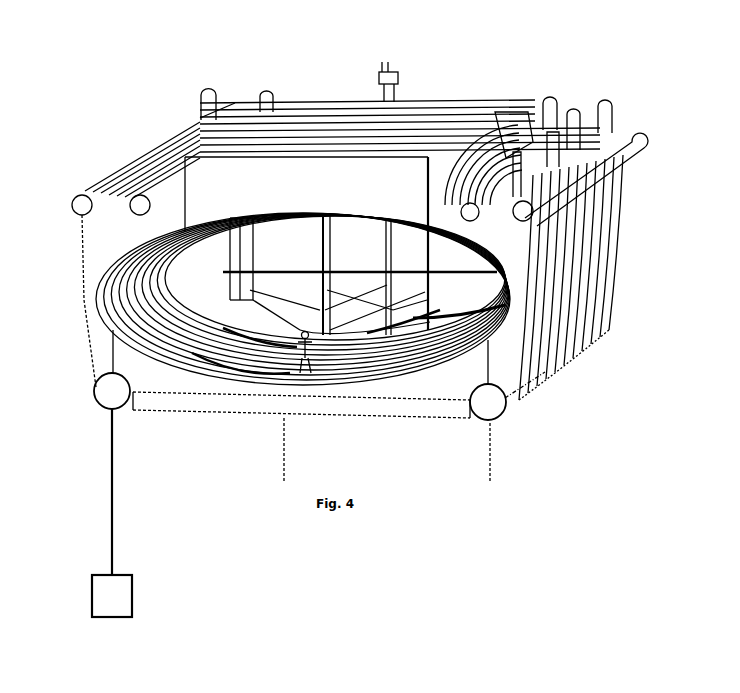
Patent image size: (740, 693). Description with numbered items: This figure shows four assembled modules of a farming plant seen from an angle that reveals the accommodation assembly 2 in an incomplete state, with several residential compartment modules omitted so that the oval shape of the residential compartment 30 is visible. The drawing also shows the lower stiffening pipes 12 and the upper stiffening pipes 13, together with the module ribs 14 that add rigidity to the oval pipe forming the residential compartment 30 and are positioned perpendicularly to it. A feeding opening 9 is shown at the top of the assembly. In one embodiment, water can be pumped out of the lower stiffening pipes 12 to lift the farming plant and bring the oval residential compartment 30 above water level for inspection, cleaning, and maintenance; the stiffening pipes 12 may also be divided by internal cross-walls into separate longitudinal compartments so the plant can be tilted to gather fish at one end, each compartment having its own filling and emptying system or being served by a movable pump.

The accommodation assembly 2 is at (115, 239).
The feeding opening 9 is at (264, 148).
The lower stiffening pipes 12 is at (104, 400).
The upper stiffening pipes 13 is at (82, 203).
The module ribs 14 is at (533, 347).
The residential compartment 30 is at (177, 320).